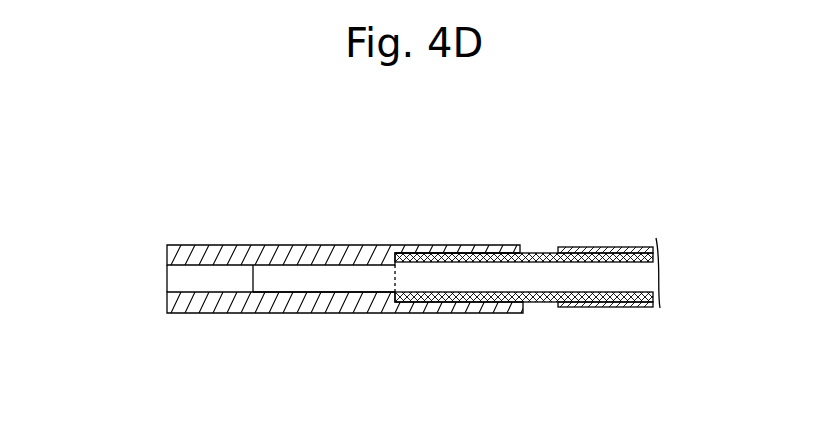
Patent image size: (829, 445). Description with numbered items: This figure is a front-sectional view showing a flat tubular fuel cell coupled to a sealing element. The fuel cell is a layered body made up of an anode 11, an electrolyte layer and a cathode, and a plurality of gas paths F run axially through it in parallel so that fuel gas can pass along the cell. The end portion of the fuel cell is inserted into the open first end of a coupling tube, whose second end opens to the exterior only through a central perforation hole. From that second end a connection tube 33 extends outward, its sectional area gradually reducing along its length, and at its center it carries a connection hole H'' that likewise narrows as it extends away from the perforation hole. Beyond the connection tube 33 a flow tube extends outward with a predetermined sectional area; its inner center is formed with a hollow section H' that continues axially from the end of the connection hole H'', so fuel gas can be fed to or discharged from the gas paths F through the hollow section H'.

The connection tube 33 is at (312, 243).
The gas path F is at (538, 251).
The hollow section H' is at (130, 288).
The connection hole H'' is at (324, 336).
The anode 11 is at (512, 311).